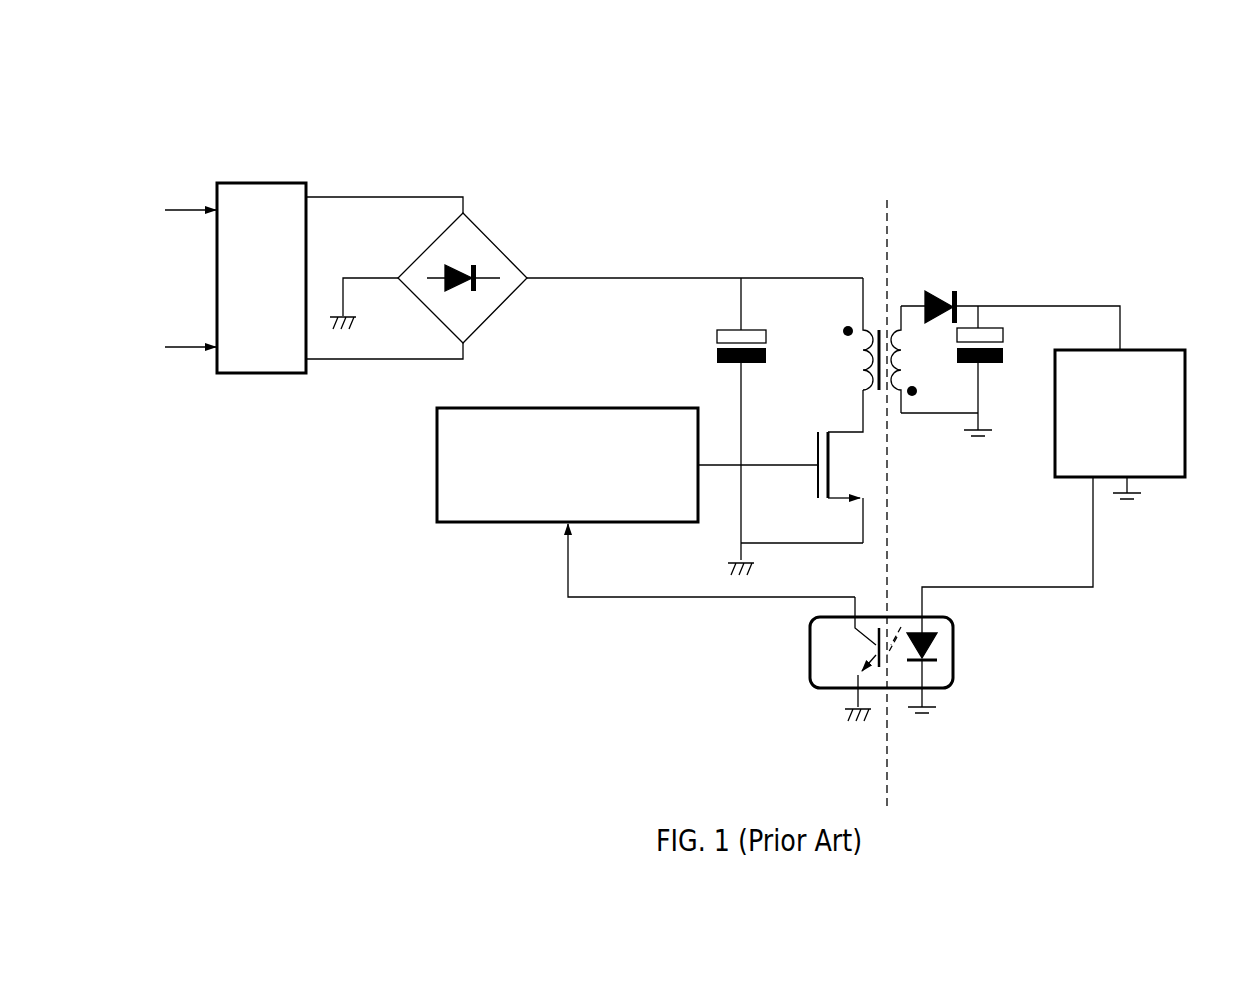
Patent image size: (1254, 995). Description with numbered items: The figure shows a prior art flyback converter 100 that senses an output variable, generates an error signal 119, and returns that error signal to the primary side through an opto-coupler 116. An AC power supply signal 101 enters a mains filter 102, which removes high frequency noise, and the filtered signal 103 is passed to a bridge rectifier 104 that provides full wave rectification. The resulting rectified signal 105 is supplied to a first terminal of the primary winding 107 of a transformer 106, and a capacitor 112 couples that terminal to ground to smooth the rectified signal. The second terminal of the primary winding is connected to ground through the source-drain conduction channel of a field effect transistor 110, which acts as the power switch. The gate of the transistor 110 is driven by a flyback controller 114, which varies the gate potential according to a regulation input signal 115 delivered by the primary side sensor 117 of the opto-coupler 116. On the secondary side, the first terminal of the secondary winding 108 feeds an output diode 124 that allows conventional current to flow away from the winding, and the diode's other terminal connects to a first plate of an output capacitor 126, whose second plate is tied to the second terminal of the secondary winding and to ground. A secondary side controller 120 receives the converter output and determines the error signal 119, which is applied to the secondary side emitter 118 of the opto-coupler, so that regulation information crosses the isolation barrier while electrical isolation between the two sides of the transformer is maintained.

The flyback converter 100 is at (773, 104).
The AC power supply signal 101 is at (178, 205).
The mains filter 102 is at (243, 326).
The filtered signal 103 is at (398, 197).
The bridge rectifier 104 is at (444, 256).
The rectified signal 105 is at (608, 277).
The transformer 106 is at (871, 285).
The primary winding 107 is at (869, 400).
The secondary winding 108 is at (911, 426).
The field effect transistor 110 is at (818, 440).
The capacitor 112 is at (716, 334).
The flyback controller 114 is at (548, 503).
The regulation input signal 115 is at (650, 631).
The opto-coupler 116 is at (845, 695).
The primary side sensor 117 is at (857, 629).
The secondary side emitter 118 is at (930, 663).
The error signal 119 is at (1047, 589).
The secondary side controller 120 is at (1101, 463).
The output diode 124 is at (979, 306).
The output capacitor 126 is at (990, 363).